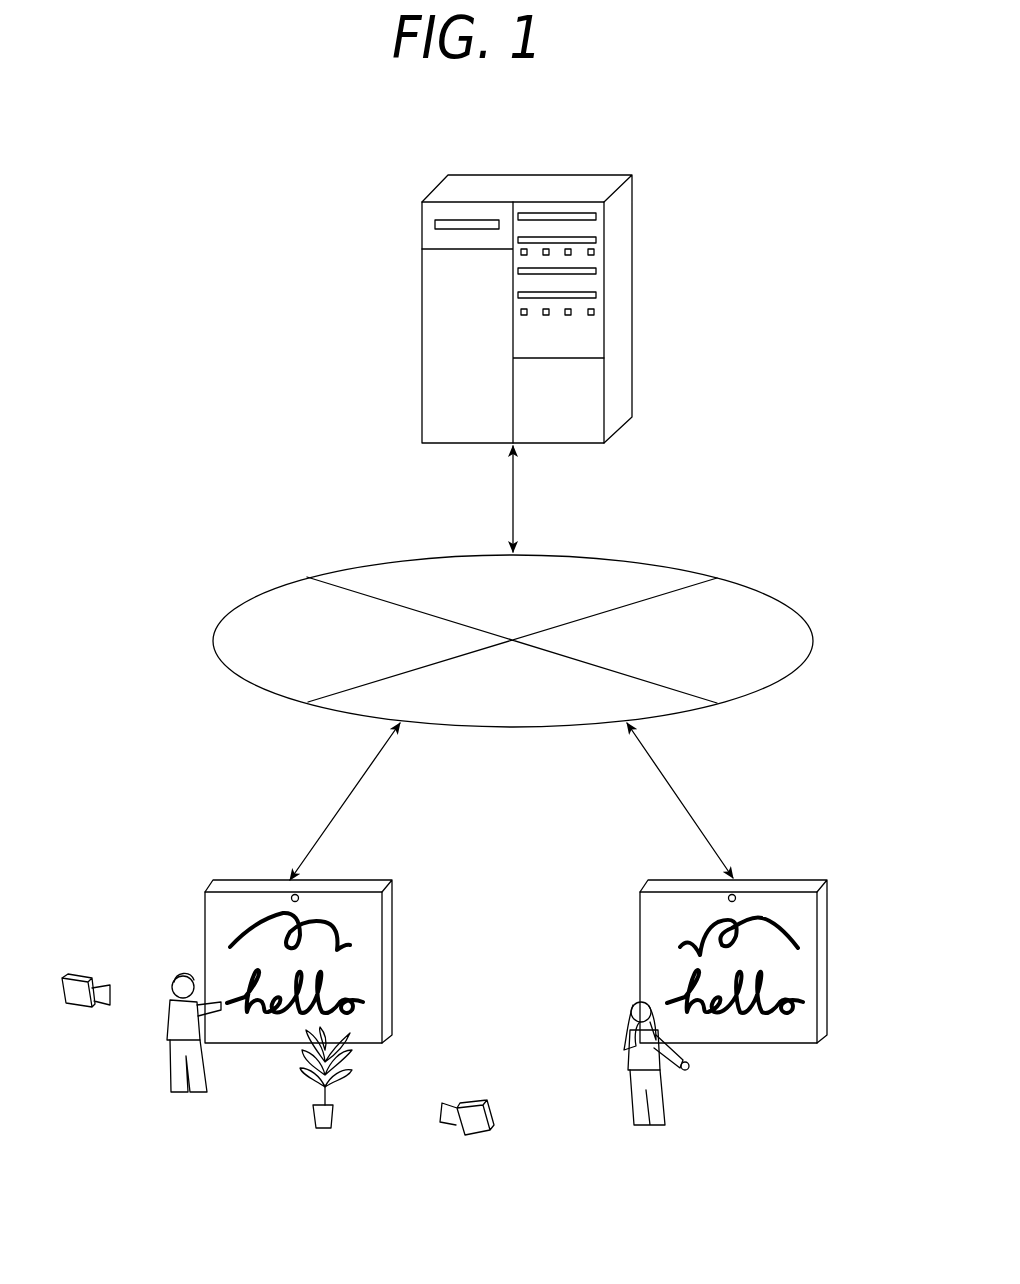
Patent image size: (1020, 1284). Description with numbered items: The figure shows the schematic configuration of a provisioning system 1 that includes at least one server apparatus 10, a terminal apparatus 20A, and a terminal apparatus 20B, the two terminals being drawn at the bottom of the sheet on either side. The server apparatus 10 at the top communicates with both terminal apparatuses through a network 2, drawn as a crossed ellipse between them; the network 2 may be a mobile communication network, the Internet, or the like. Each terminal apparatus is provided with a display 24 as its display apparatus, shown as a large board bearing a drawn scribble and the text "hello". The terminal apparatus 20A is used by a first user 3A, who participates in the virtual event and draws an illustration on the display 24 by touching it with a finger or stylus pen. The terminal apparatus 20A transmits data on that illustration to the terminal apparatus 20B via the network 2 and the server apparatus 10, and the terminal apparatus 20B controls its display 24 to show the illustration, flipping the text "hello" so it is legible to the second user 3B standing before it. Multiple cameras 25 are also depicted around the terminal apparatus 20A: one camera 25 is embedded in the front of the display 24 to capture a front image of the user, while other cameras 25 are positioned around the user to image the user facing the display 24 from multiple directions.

The provisioning system 1 is at (203, 178).
The server apparatus 10 is at (675, 162).
The network 2 is at (673, 567).
The terminal apparatus 20A is at (215, 866).
The terminal apparatus 20B is at (638, 864).
The display 24 is at (363, 933).
The camera 25 is at (297, 895).
The first user 3A is at (167, 1054).
The second user 3B is at (630, 1093).